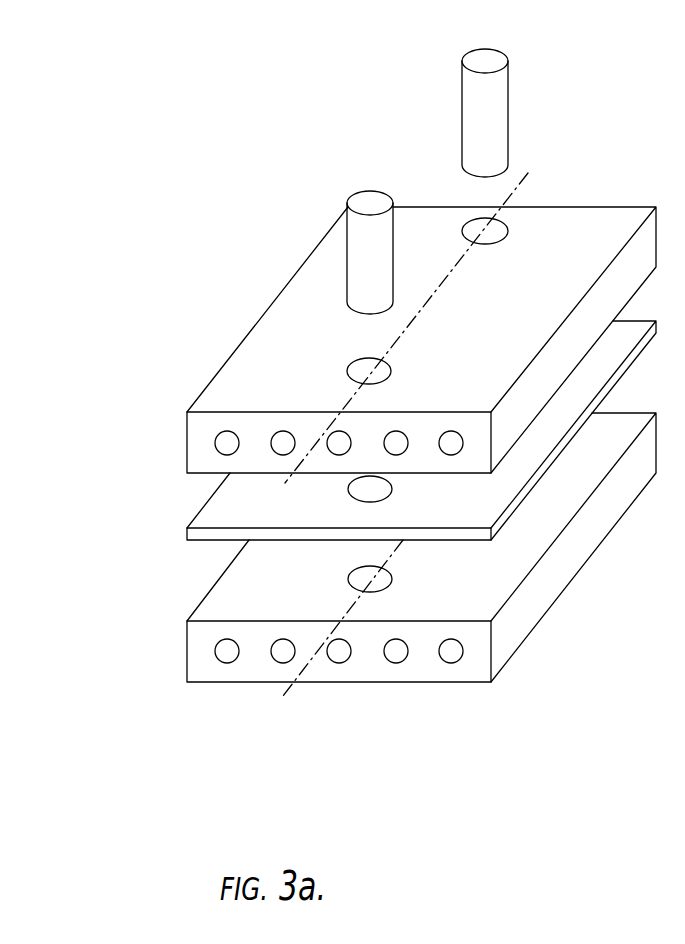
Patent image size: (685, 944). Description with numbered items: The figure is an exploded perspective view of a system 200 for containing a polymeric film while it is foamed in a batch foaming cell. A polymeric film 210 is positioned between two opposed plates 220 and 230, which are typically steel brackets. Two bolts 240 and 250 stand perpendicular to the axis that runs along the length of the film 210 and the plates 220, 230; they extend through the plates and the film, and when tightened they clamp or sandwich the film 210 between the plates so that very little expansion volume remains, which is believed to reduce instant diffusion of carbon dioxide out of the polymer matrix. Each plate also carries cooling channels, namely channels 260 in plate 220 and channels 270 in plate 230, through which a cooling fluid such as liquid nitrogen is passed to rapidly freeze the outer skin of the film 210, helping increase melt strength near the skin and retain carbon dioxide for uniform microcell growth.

The system 200 is at (360, 430).
The polymeric film 210 is at (187, 534).
The plate 220 is at (369, 344).
The plate 230 is at (360, 591).
The bolt 240 is at (359, 192).
The bolt 250 is at (500, 52).
The cooling channel 260 is at (225, 442).
The cooling channel 270 is at (228, 662).